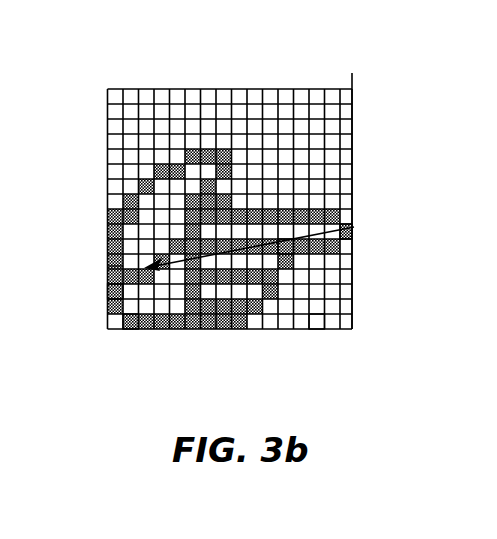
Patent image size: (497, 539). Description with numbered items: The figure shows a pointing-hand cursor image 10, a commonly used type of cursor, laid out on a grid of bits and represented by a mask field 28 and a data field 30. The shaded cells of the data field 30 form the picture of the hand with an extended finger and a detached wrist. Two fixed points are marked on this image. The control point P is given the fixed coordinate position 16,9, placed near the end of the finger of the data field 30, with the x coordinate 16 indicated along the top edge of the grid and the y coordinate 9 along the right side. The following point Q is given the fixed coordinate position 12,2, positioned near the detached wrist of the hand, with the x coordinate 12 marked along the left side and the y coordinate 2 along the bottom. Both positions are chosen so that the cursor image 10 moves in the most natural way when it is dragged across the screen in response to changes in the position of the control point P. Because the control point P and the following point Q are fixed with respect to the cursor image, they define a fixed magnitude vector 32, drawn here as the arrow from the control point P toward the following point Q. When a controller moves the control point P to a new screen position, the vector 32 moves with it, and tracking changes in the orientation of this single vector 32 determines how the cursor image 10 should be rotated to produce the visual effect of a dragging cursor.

The pointing-hand cursor image 10 is at (108, 104).
The x coordinate of control point P 16 is at (352, 60).
The y coordinate of control point P 9 is at (382, 224).
The x coordinate of following point Q 12 is at (108, 266).
The fixed magnitude vector 32 is at (286, 244).
The data field 30 is at (211, 318).
The mask field 28 is at (313, 322).
The y coordinate of following point Q 2 is at (138, 332).
The control point P is at (354, 227).
The following point Q is at (140, 283).